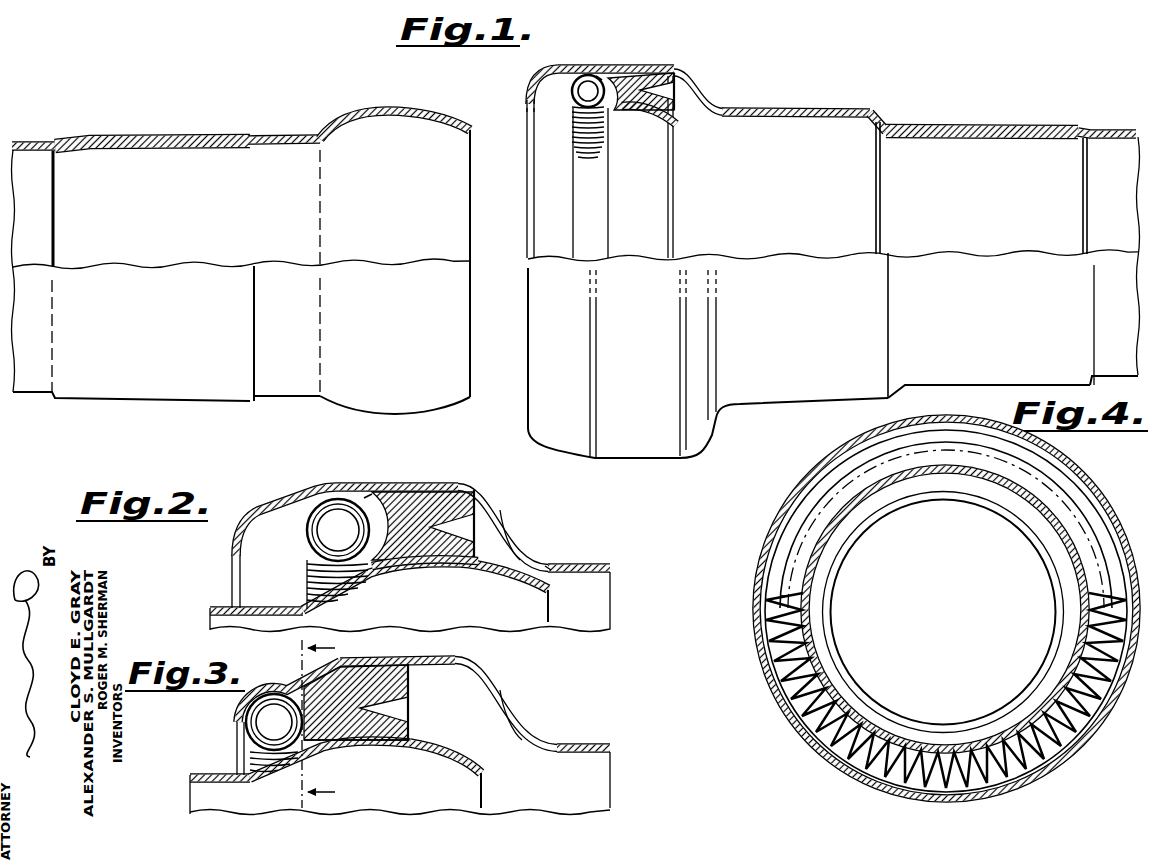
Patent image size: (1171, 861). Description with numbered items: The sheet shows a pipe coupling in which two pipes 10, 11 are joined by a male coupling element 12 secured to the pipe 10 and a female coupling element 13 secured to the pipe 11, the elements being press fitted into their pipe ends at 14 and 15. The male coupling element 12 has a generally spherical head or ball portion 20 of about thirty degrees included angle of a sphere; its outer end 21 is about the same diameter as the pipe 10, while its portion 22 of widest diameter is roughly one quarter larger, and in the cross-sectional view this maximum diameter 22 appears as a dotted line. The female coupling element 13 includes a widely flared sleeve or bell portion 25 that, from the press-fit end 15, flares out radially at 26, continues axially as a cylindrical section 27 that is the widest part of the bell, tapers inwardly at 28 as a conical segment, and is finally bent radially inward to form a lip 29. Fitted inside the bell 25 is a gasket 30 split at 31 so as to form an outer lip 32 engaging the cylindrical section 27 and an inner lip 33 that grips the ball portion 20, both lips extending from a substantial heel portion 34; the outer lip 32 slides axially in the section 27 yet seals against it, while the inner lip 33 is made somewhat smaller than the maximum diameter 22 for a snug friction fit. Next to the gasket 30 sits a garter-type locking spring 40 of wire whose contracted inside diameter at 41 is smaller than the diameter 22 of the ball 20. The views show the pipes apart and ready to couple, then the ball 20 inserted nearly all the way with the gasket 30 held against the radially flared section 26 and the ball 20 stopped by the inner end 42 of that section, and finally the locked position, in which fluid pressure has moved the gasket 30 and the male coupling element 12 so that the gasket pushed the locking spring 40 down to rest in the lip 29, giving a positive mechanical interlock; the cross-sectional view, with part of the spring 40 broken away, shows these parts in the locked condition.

In FIG. 1, the pipe 10 is at (52, 143).
In FIG. 1, the pipe 11 is at (1120, 130).
In FIG. 1, the male coupling element 12 is at (295, 145).
In FIG. 2, the male coupling element 12 is at (210, 609).
In FIG. 3, the male coupling element 12 is at (190, 777).
In FIG. 4, the male coupling element 12 is at (868, 690).
In FIG. 1, the female coupling element 13 is at (832, 118).
In FIG. 2, the female coupling element 13 is at (612, 570).
In FIG. 3, the female coupling element 13 is at (612, 748).
In FIG. 4, the female coupling element 13 is at (855, 778).
In FIG. 1, the press-fit 14 is at (152, 148).
In FIG. 1, the press-fit end 15 is at (1000, 138).
In FIG. 1, the head or ball portion 20 is at (425, 132).
In FIG. 2, the head or ball portion 20 is at (510, 578).
In FIG. 3, the head or ball portion 20 is at (468, 762).
In FIG. 4, the head or ball portion 20 is at (828, 670).
In FIG. 1, the outer end 21 is at (472, 137).
In FIG. 2, the outer end 21 is at (552, 598).
In FIG. 3, the outer end 21 is at (484, 782).
In FIG. 1, the portion of widest diameter 22 is at (404, 112).
In FIG. 2, the portion of widest diameter 22 is at (437, 568).
In FIG. 3, the portion of widest diameter 22 is at (392, 751).
In FIG. 4, the portion of widest diameter 22 is at (940, 452).
In FIG. 1, the sleeve or bell portion 25 is at (664, 69).
In FIG. 2, the sleeve or bell portion 25 is at (462, 484).
In FIG. 3, the sleeve or bell portion 25 is at (468, 661).
In FIG. 4, the sleeve or bell portion 25 is at (820, 755).
In FIG. 1, the radially flared section 26 is at (712, 100).
In FIG. 2, the radially flared section 26 is at (508, 522).
In FIG. 3, the radially flared section 26 is at (520, 702).
In FIG. 1, the cylindrical section 27 is at (628, 66).
In FIG. 2, the cylindrical section 27 is at (392, 486).
In FIG. 3, the cylindrical section 27 is at (408, 657).
In FIG. 1, the conical segment 28 is at (565, 72).
In FIG. 2, the conical segment 28 is at (298, 494).
In FIG. 3, the conical segment 28 is at (278, 677).
In FIG. 4, the conical segment 28 is at (790, 710).
In FIG. 1, the lip 29 is at (528, 100).
In FIG. 2, the lip 29 is at (232, 540).
In FIG. 3, the lip 29 is at (238, 722).
In FIG. 4, the lip 29 is at (790, 545).
In FIG. 1, the gasket 30 is at (650, 110).
In FIG. 2, the gasket 30 is at (382, 564).
In FIG. 3, the gasket 30 is at (335, 748).
In FIG. 1, the split 31 is at (668, 108).
In FIG. 2, the split 31 is at (432, 527).
In FIG. 3, the split 31 is at (410, 706).
In FIG. 1, the outer lip 32 is at (678, 76).
In FIG. 2, the outer lip 32 is at (477, 492).
In FIG. 3, the outer lip 32 is at (411, 678).
In FIG. 1, the inner lip 33 is at (668, 122).
In FIG. 2, the inner lip 33 is at (480, 560).
In FIG. 3, the inner lip 33 is at (412, 740).
In FIG. 1, the heel portion 34 is at (598, 75).
In FIG. 2, the heel portion 34 is at (363, 497).
In FIG. 3, the heel portion 34 is at (273, 723).
In FIG. 1, the locking spring 40 is at (580, 115).
In FIG. 2, the locking spring 40 is at (308, 540).
In FIG. 3, the locking spring 40 is at (250, 742).
In FIG. 4, the locking spring 40 is at (1082, 480).
In FIG. 3, the contracted inside diameter of the spring 41 is at (287, 760).
In FIG. 2, the inner end of the radially flared section 42 is at (550, 570).